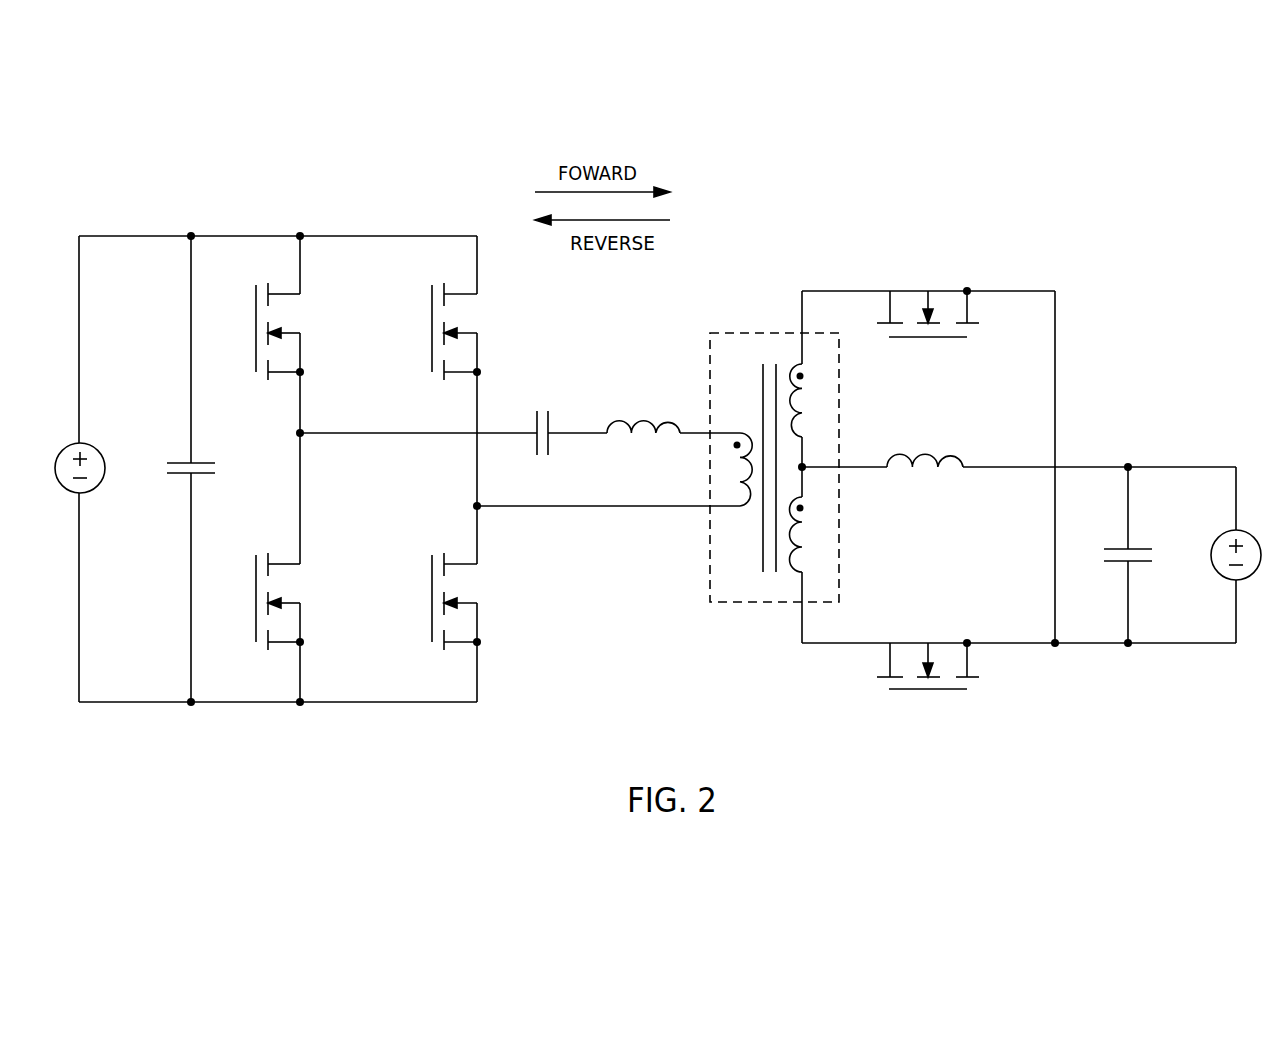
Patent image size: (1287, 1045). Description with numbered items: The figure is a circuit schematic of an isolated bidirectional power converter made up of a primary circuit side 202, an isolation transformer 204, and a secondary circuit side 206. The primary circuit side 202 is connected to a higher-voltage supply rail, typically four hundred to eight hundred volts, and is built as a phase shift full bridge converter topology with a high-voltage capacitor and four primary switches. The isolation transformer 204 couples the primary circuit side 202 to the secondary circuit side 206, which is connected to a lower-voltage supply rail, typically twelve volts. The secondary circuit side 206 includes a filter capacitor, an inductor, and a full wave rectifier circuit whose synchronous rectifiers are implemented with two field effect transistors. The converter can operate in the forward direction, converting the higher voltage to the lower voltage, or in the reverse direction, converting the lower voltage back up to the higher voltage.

The primary circuit side 202 is at (412, 210).
The isolation transformer 204 is at (743, 333).
The secondary circuit side 206 is at (1101, 280).